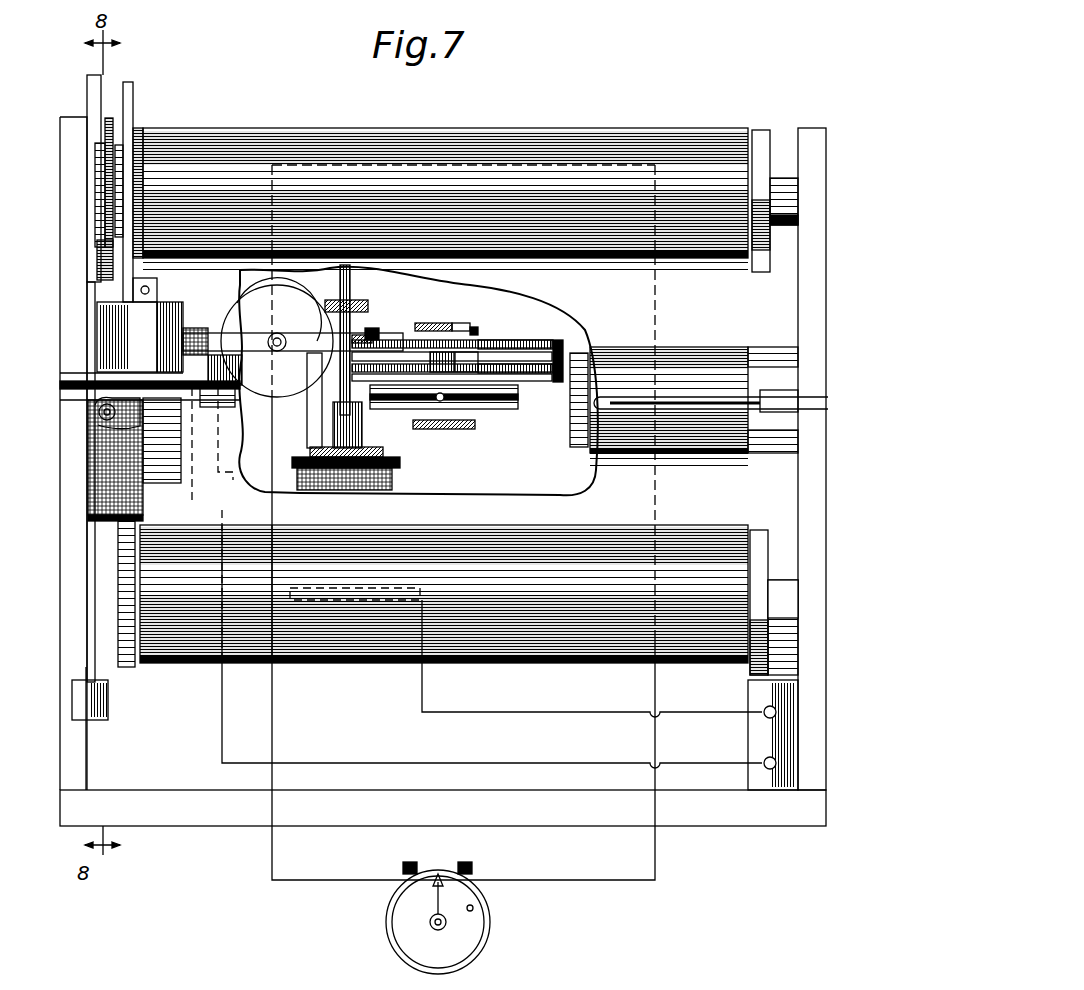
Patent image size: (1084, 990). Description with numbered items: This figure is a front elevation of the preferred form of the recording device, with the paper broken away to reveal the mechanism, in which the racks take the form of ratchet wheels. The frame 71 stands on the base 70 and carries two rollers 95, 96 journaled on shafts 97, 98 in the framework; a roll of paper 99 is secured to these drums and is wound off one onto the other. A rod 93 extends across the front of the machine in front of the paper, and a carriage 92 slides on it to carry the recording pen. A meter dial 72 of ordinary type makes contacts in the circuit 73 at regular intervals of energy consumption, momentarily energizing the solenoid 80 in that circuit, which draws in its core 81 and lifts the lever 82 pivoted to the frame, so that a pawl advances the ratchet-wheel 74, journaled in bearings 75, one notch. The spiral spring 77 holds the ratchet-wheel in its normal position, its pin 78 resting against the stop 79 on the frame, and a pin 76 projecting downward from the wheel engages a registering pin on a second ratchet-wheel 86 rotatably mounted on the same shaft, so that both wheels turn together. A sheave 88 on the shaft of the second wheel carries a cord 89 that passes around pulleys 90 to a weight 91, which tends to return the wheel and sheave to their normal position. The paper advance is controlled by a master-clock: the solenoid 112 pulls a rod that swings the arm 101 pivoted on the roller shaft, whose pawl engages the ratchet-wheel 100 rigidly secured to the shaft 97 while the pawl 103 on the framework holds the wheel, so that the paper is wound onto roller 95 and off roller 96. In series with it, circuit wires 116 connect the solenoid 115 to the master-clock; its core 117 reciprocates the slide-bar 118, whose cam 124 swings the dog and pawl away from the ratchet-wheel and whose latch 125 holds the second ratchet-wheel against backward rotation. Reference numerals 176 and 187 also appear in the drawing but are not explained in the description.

The base 70 is at (720, 806).
The frame 71 is at (810, 553).
The dial of a meter 72 is at (410, 937).
The circuit 73 is at (270, 860).
The ratchet-wheel 74 is at (515, 344).
The bearings 75 is at (478, 330).
The pin 76 is at (413, 338).
The spiral spring 77 is at (455, 330).
The pin 78 is at (480, 361).
The stop 79 is at (480, 330).
The solenoid 80 is at (285, 265).
The core 81 is at (270, 335).
The lever 82 is at (212, 325).
The ratchet-wheel 86 is at (549, 361).
The sheave 88 is at (349, 400).
The cord 89 is at (570, 405).
The pulleys 90 is at (150, 405).
The weight 91 is at (108, 712).
The carriage 92 is at (228, 398).
The rod 93 is at (695, 400).
The roller 95 is at (758, 140).
The roller 96 is at (753, 543).
The shaft 97 is at (785, 185).
The shaft 98 is at (785, 585).
The roll of paper 99 is at (740, 348).
The ratchet-wheel 100 is at (112, 120).
The arm 101 is at (120, 160).
The pawl 103 is at (97, 258).
The solenoid 112 is at (100, 467).
The solenoid 115 is at (400, 485).
The circuit wires 116 is at (233, 480).
The core 117 is at (436, 436).
The slide-bar 118 is at (352, 296).
The cam 124 is at (338, 300).
The latch 125 is at (378, 328).
The pin 176 is at (375, 320).
The gear 187 is at (424, 361).